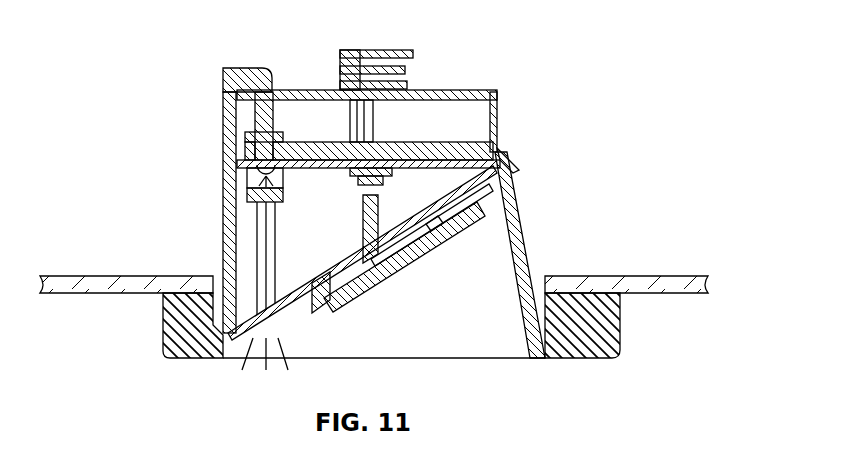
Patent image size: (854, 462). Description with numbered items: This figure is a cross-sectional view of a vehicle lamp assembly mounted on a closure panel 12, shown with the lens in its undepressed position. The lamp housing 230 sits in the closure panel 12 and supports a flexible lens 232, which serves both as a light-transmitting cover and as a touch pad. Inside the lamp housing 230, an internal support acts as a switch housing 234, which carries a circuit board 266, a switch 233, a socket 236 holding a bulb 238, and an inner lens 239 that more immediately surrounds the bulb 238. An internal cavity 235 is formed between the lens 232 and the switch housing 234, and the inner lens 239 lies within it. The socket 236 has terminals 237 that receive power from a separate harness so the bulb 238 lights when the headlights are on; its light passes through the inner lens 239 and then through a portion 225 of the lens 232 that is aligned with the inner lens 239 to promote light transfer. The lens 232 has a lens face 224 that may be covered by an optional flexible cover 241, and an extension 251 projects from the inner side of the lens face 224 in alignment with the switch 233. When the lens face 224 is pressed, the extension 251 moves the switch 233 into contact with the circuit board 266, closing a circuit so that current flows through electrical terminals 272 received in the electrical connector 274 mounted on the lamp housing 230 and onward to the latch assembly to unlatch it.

The closure panel 12 is at (140, 276).
The lens face 224 is at (345, 293).
The portion of the lens 225 is at (272, 315).
The lamp housing 230 is at (228, 134).
The lens 232 is at (423, 240).
The switch 233 is at (430, 150).
The switch housing 234 is at (516, 162).
The internal cavity 235 is at (346, 162).
The socket 236 is at (256, 120).
The terminals 237 is at (268, 72).
The bulb 238 is at (245, 184).
The inner lens 239 is at (258, 200).
The flexible cover 241 is at (387, 285).
The extension 251 is at (364, 224).
The circuit board 266 is at (428, 142).
The electrical terminals 272 is at (382, 110).
The electrical connector 274 is at (368, 52).